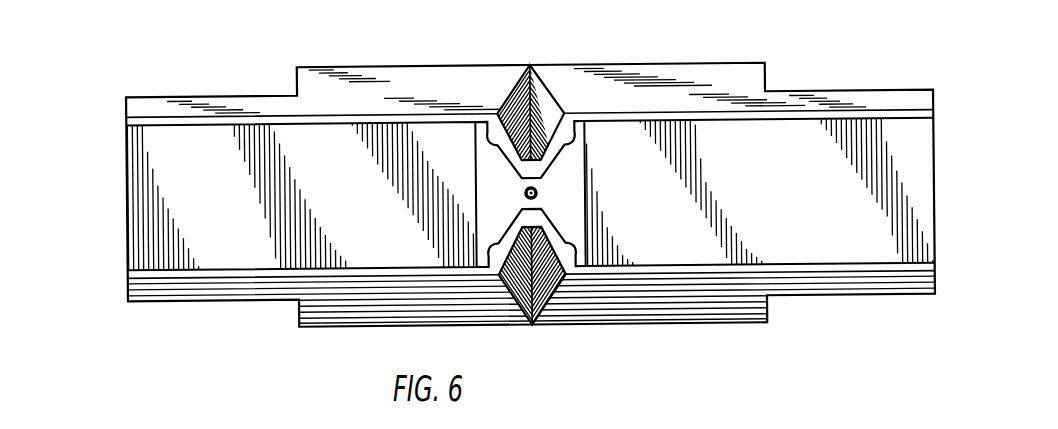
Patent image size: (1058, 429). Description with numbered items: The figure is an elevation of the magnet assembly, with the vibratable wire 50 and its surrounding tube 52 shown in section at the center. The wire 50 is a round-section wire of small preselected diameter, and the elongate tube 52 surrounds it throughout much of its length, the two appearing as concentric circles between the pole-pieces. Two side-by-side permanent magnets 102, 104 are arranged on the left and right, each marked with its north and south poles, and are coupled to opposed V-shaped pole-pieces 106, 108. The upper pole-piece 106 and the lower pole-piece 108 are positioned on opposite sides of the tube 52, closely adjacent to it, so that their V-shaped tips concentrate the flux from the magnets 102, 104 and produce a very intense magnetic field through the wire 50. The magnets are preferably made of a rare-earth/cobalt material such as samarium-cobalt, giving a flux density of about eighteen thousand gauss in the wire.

The vibratable wire 50 is at (536, 197).
The elongate tube 52 is at (526, 191).
The permanent magnet 102 is at (126, 152).
The permanent magnet 104 is at (934, 146).
The V-shaped pole-piece 106 is at (546, 103).
The V-shaped pole-piece 108 is at (543, 312).